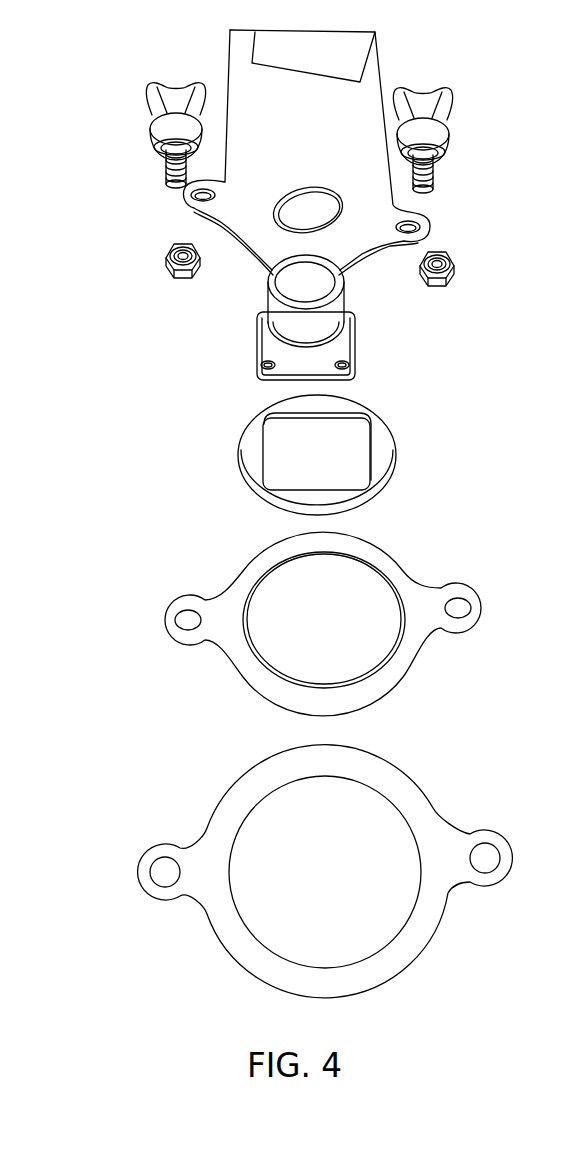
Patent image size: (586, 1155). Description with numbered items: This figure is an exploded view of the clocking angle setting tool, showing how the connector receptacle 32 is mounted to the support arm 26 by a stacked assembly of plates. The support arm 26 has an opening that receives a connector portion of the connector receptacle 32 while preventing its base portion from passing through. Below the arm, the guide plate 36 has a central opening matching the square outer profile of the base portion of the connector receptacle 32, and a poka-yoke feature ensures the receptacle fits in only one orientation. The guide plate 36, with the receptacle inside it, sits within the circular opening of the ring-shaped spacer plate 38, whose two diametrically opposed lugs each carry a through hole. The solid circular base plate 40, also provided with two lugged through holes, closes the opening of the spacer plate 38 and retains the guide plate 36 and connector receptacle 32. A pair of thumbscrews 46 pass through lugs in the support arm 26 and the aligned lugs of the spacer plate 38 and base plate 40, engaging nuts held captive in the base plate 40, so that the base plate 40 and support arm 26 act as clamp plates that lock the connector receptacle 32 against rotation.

The support arm 26 is at (205, 221).
The connector receptacle 32 is at (346, 296).
The guide plate 36 is at (230, 451).
The spacer plate 38 is at (153, 622).
The base plate 40 is at (120, 867).
The thumbscrews 46 is at (446, 119).